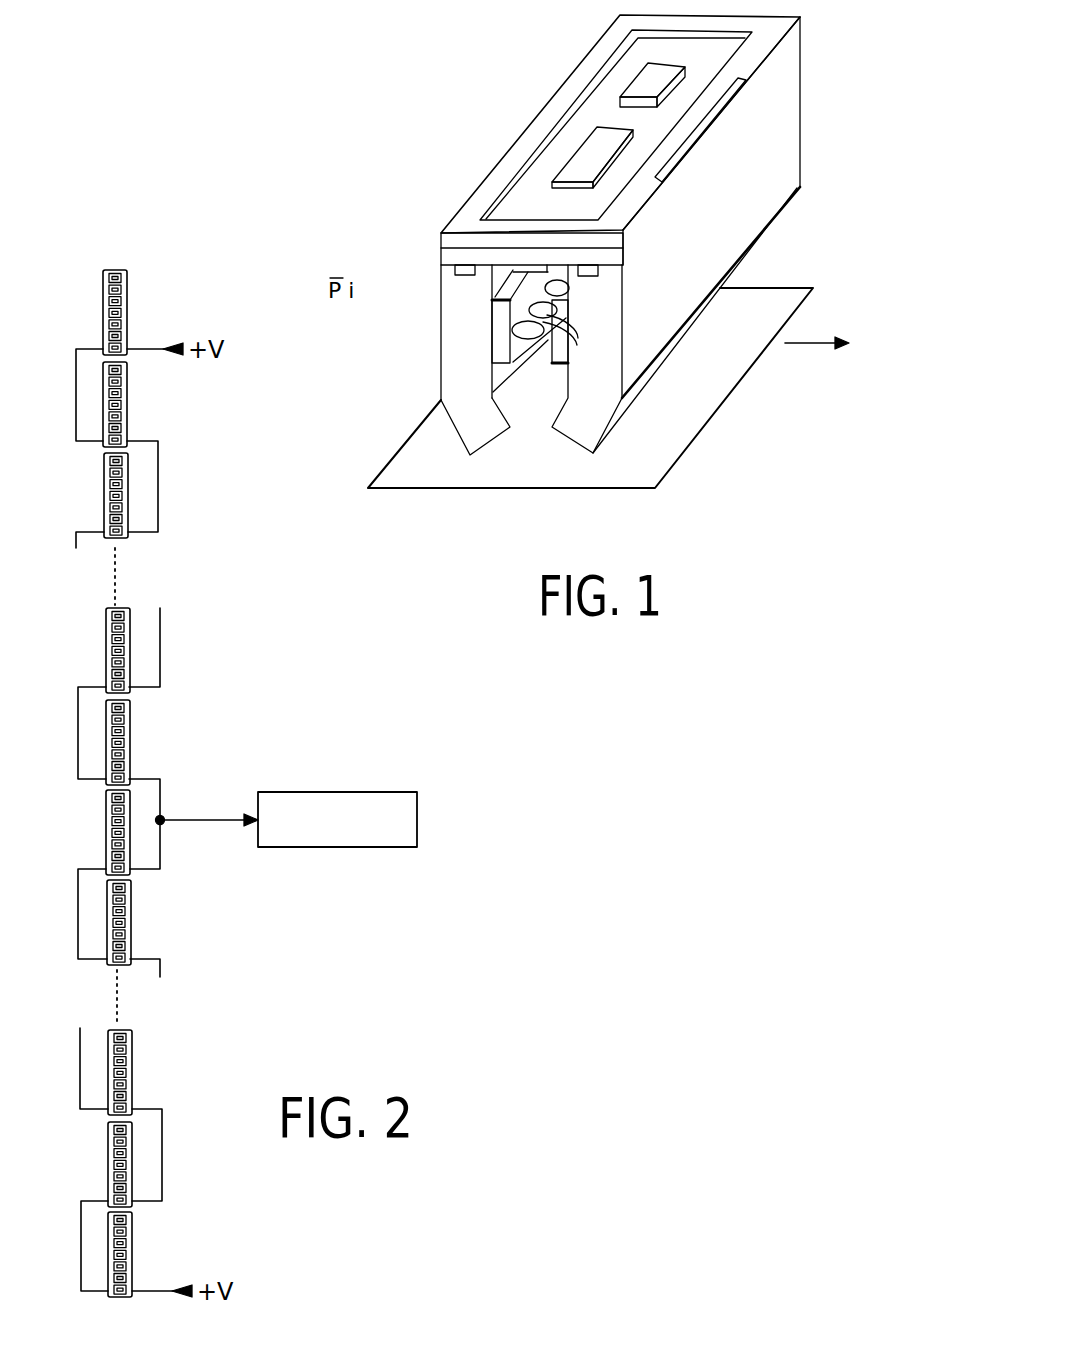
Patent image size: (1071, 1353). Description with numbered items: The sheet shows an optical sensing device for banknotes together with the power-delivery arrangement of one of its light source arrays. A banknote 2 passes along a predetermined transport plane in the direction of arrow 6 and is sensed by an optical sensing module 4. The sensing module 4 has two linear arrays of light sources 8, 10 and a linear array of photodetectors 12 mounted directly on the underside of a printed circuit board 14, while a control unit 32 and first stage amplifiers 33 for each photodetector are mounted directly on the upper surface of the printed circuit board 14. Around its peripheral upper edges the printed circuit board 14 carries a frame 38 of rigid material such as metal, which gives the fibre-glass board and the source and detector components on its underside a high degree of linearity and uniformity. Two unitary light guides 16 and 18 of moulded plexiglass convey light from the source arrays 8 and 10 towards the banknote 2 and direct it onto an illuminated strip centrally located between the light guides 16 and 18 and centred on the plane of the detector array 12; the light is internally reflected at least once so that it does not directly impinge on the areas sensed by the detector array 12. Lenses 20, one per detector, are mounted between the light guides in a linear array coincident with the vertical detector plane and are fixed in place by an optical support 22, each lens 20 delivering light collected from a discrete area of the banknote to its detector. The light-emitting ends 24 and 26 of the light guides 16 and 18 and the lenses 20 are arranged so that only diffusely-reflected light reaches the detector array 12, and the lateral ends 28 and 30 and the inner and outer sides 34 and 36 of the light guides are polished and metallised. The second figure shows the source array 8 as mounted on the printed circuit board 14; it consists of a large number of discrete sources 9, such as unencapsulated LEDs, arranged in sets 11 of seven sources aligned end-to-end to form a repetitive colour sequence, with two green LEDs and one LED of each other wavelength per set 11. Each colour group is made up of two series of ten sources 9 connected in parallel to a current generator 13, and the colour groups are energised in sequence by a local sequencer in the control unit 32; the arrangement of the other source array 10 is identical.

In FIG. 1, the banknote 2 is at (683, 440).
In FIG. 1, the optical sensing module 4 is at (814, 135).
In FIG. 1, the arrow 6 is at (810, 347).
In FIG. 1, the light source array 8 is at (453, 268).
In FIG. 2, the light source array 8 is at (160, 308).
In FIG. 2, the light sources 9 is at (107, 1038).
In FIG. 1, the light source array 10 is at (592, 275).
In FIG. 2, the sets of sources 11 is at (105, 660).
In FIG. 1, the photodetector array 12 is at (515, 268).
In FIG. 2, the current generator 13 is at (300, 790).
In FIG. 1, the printed circuit board 14 is at (450, 255).
In FIG. 1, the light guide 16 is at (450, 383).
In FIG. 1, the light guide 18 is at (788, 110).
In FIG. 1, the lenses 20 is at (543, 310).
In FIG. 1, the optical support 22 is at (497, 335).
In FIG. 1, the light-emitting end 24 is at (485, 450).
In FIG. 1, the light-emitting end 26 is at (582, 455).
In FIG. 1, the lateral end 28 is at (563, 405).
In FIG. 1, the lateral end 30 is at (802, 170).
In FIG. 1, the control unit 32 is at (590, 143).
In FIG. 1, the first stage amplifiers 33 is at (635, 90).
In FIG. 1, the inner side 34 is at (520, 412).
In FIG. 1, the outer side 36 is at (752, 218).
In FIG. 1, the frame 38 is at (593, 62).